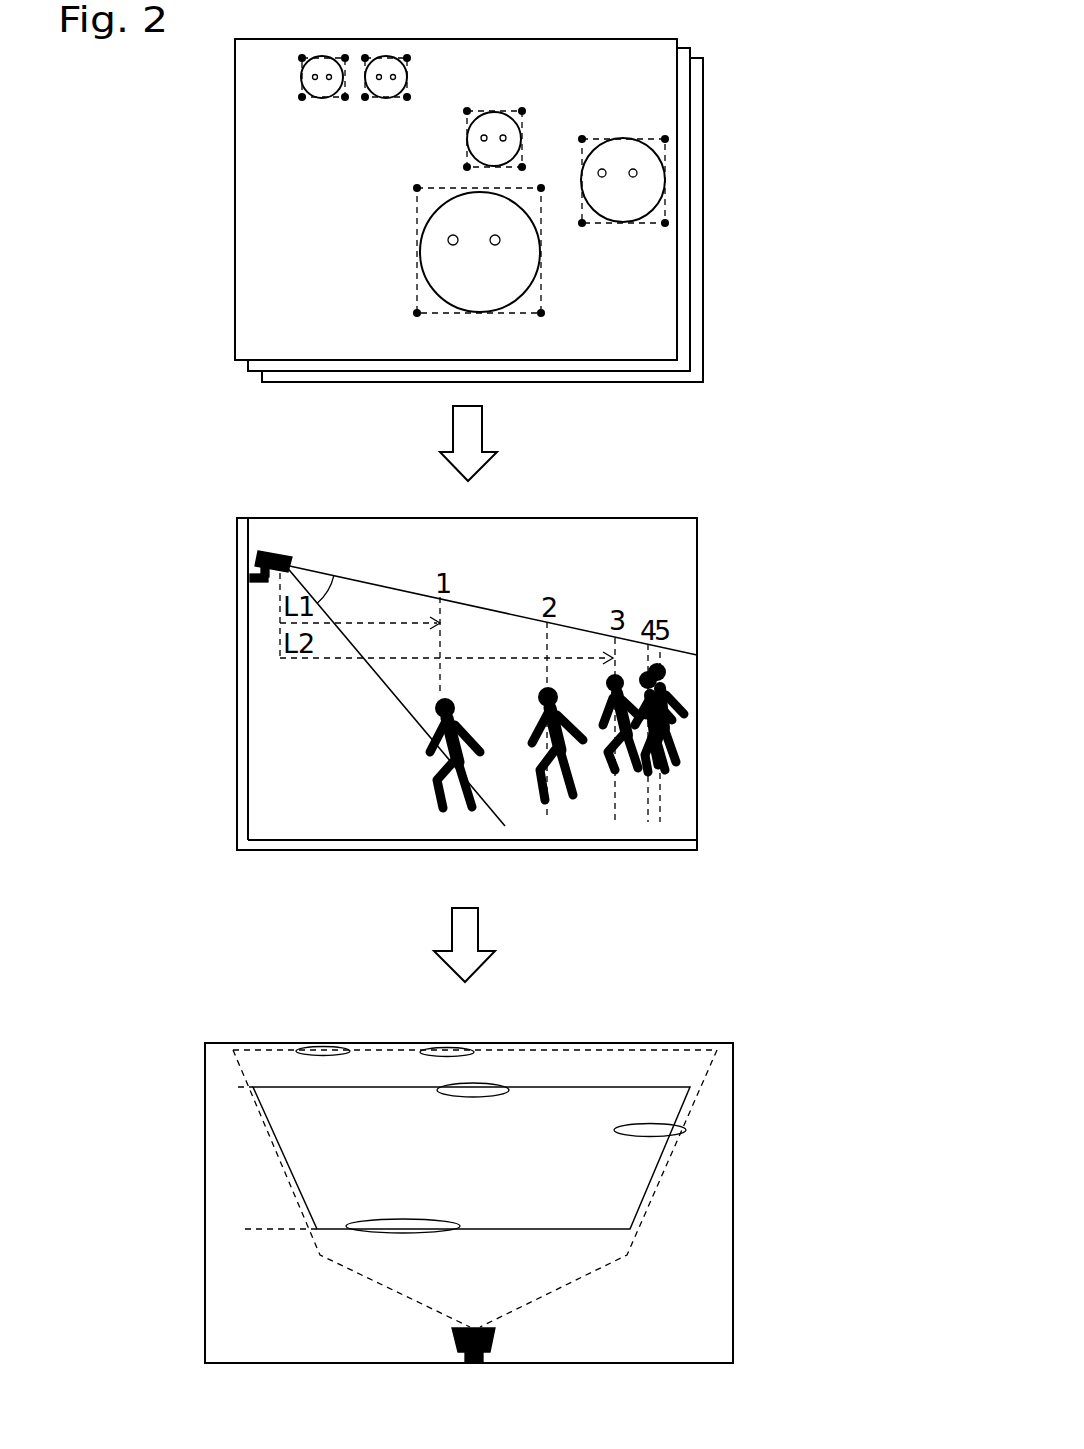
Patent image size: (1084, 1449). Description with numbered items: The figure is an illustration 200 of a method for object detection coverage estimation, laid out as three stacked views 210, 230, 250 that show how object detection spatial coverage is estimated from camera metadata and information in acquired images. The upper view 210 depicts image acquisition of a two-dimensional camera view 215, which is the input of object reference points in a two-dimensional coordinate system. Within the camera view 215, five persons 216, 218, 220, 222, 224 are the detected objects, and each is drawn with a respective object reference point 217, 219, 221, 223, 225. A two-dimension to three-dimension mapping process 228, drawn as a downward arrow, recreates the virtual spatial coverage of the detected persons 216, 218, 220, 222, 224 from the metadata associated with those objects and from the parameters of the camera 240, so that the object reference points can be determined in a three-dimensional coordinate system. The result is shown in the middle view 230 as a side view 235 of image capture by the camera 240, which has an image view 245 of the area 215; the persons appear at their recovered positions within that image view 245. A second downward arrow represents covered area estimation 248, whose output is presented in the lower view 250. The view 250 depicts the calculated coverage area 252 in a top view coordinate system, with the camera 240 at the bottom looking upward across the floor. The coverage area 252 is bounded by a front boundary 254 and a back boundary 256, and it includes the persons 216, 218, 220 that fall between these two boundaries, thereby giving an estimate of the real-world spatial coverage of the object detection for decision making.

The illustration 200 is at (165, 1029).
The view 210 is at (675, 280).
The camera view 215 is at (305, 310).
The person 216 is at (498, 298).
The object reference point 217 is at (417, 218).
The person 218 is at (645, 219).
The object reference point 219 is at (608, 225).
The person 220 is at (494, 112).
The object reference point 221 is at (526, 113).
The person 222 is at (326, 100).
The object reference point 223 is at (338, 57).
The person 224 is at (388, 100).
The object reference point 225 is at (400, 57).
The 2D to 3D mapping process 228 is at (453, 434).
The view 230 is at (548, 851).
The side view 235 is at (322, 801).
The camera 240 is at (275, 551).
The image view 245 is at (330, 586).
The covered area estimation 248 is at (452, 932).
The view 250 is at (733, 1290).
The coverage area 252 is at (600, 1213).
The front boundary L1 254 is at (263, 1233).
The back boundary L2 256 is at (254, 1082).